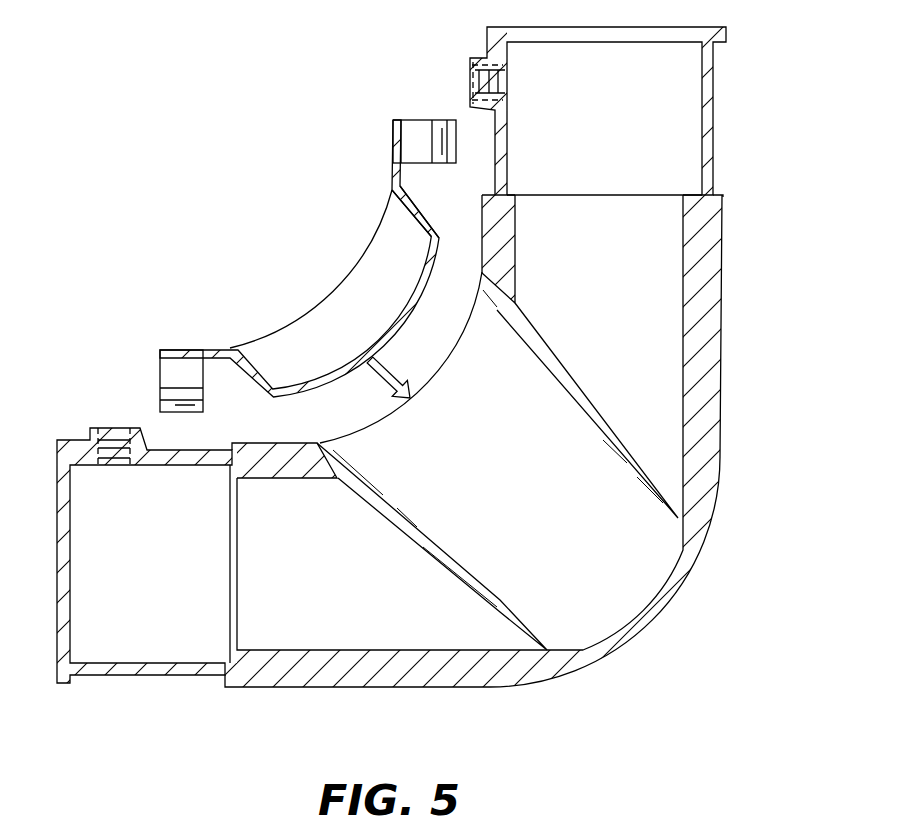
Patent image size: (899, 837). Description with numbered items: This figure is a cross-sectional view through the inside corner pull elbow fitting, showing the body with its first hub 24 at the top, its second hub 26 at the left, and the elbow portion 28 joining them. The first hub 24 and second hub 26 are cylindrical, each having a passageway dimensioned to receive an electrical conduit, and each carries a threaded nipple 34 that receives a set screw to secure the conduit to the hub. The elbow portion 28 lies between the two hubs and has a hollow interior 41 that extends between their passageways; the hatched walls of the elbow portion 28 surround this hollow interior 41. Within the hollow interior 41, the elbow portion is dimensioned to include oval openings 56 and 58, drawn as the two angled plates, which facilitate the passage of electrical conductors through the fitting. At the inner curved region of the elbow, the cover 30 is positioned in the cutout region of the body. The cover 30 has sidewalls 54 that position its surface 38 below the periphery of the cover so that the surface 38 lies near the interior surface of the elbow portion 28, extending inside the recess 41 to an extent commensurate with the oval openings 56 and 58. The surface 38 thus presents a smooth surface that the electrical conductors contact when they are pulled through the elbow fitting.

The first hub 24 is at (713, 128).
The second hub 26 is at (137, 675).
The elbow portion 28 is at (449, 418).
The cover 30 is at (449, 418).
The threaded nipple 34 is at (472, 58).
The surface 38 is at (392, 328).
The hollow interior 41 is at (657, 318).
The sidewalls 54 is at (424, 214).
The oval opening 56 is at (574, 380).
The oval opening 58 is at (413, 537).